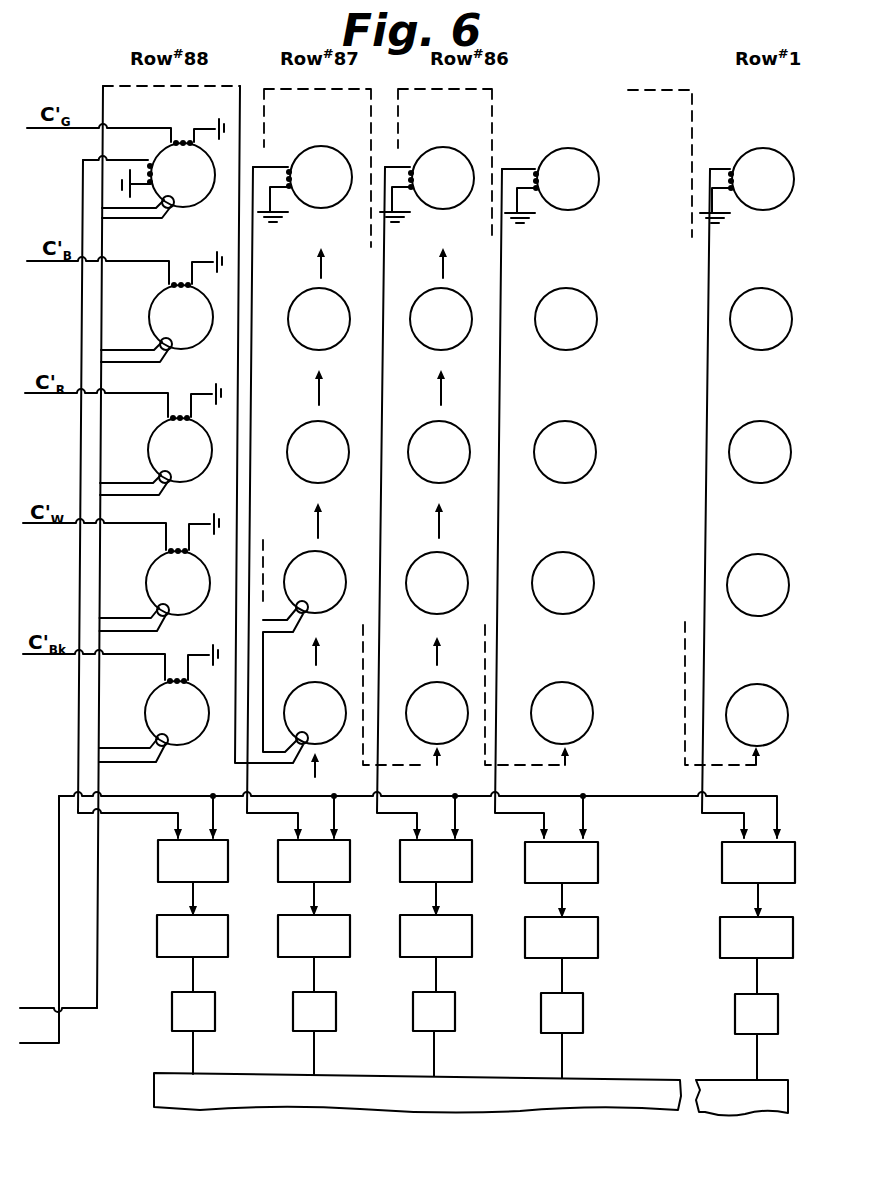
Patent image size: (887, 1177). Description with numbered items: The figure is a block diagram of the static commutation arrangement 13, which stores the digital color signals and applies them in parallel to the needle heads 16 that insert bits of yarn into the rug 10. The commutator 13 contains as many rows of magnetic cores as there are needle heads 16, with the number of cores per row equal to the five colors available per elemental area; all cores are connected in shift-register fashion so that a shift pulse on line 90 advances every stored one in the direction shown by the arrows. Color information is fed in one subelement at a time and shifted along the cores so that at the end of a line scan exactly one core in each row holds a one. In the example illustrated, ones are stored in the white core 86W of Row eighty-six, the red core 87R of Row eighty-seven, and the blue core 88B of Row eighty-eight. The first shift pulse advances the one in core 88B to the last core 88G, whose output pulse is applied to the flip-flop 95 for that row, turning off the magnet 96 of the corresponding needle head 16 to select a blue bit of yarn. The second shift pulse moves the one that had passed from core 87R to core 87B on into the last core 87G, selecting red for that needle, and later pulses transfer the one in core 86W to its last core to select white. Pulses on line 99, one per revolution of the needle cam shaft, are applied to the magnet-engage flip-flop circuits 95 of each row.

The rug 10 is at (283, 1100).
The static commutation arrangement 13 is at (654, 251).
The needle head 16 is at (293, 1006).
The shift pulse line 90 is at (45, 1006).
The flip-flop 95 is at (277, 864).
The magnet 96 is at (278, 942).
The magnet-engage pulse line 99 is at (59, 1044).
The last or green core of Row #87 87G is at (320, 145).
The blue core of Row #87 87B is at (293, 300).
The red core of Row #87 87R is at (293, 433).
The white core of Row #86 86W is at (420, 565).
The last or green core of Row #88 88G is at (192, 207).
The blue core of Row #88 88B is at (151, 313).